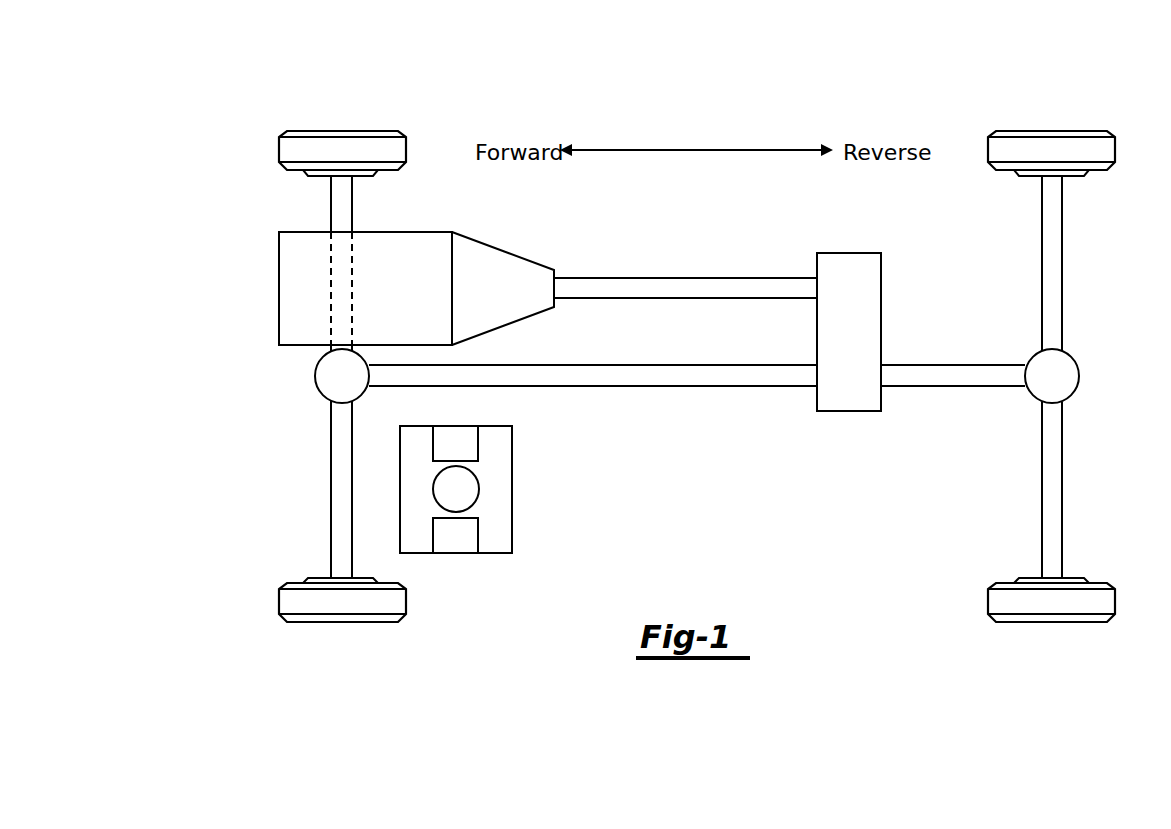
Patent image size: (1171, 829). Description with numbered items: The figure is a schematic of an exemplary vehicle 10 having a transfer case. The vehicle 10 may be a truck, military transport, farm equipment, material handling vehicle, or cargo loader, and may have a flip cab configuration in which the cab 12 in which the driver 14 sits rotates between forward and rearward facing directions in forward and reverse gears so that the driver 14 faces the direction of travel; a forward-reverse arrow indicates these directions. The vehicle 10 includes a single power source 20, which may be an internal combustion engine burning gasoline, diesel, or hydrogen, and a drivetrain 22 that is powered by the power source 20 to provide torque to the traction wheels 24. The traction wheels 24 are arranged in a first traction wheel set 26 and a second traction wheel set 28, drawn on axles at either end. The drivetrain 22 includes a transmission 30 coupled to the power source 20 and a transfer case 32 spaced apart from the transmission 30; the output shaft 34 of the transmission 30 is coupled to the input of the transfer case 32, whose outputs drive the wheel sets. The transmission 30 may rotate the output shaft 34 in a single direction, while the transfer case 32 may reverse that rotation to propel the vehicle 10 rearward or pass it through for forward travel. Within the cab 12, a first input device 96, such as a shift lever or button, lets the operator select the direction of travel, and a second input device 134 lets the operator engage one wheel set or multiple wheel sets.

The vehicle 10 is at (368, 112).
The cab 12 is at (513, 488).
The driver 14 is at (465, 502).
The power source 20 is at (406, 301).
The drivetrain 22 is at (649, 243).
The traction wheels 24 is at (279, 150).
The first traction wheel set 26 is at (1076, 634).
The second traction wheel set 28 is at (311, 634).
The transmission 30 is at (488, 301).
The transfer case 32 is at (856, 339).
The output shaft 34 is at (712, 277).
The first input device 96 is at (465, 546).
The second input device 134 is at (470, 454).